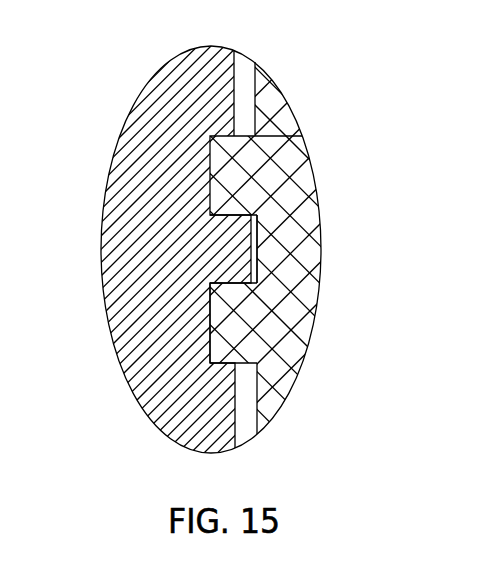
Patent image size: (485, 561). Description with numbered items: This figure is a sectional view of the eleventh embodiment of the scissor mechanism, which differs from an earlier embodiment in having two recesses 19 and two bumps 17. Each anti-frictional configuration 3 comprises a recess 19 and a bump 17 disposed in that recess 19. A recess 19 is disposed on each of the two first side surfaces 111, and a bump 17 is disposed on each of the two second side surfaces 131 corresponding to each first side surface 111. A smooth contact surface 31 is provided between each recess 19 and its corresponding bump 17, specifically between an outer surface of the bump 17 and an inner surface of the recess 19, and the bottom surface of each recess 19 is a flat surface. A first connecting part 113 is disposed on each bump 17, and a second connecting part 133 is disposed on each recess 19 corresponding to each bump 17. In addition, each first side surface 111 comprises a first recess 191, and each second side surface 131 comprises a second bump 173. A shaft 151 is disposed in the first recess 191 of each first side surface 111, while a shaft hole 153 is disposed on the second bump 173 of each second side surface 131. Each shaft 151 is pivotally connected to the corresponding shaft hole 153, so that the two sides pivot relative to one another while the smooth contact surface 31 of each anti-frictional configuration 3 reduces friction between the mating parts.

The anti-frictional configuration 3 is at (283, 396).
The bump 17 is at (240, 331).
The recess 19 is at (198, 317).
The smooth contact surface 31 is at (225, 168).
The first side surface 111 is at (247, 66).
The first connecting part 113 is at (195, 277).
The second side surface 131 is at (250, 66).
The second connecting part 133 is at (284, 281).
The shaft 151 is at (232, 247).
The shaft hole 153 is at (259, 264).
The second bump 173 is at (242, 350).
The first recess 191 is at (206, 342).